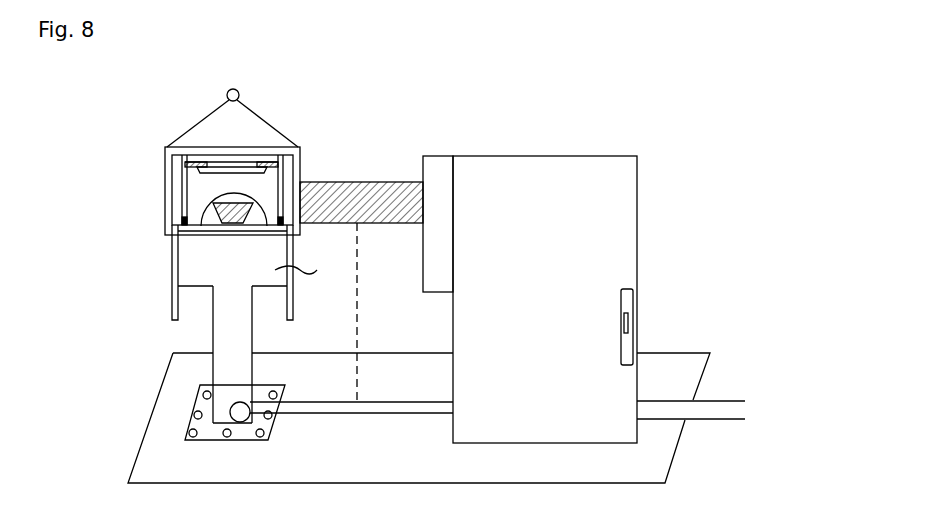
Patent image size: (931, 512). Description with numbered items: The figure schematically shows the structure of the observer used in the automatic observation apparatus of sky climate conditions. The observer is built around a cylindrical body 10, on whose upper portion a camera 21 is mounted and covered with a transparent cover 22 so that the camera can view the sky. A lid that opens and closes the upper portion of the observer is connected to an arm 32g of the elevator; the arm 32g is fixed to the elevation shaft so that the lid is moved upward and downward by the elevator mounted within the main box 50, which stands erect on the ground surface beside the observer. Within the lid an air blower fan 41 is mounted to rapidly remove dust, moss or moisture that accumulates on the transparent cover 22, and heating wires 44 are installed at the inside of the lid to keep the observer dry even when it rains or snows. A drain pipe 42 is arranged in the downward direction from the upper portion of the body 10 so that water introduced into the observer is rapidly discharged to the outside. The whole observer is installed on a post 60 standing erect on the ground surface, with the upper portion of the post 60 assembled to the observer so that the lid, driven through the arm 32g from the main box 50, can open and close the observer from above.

The cylindrical body 10 is at (170, 155).
The camera 21 is at (210, 206).
The transparent cover 22 is at (188, 219).
The arm 32g is at (329, 182).
The air blower fan 41 is at (207, 165).
The drain pipe 42 is at (172, 268).
The heating wires 44 is at (270, 166).
The main box 50 is at (615, 200).
The post 60 is at (222, 333).